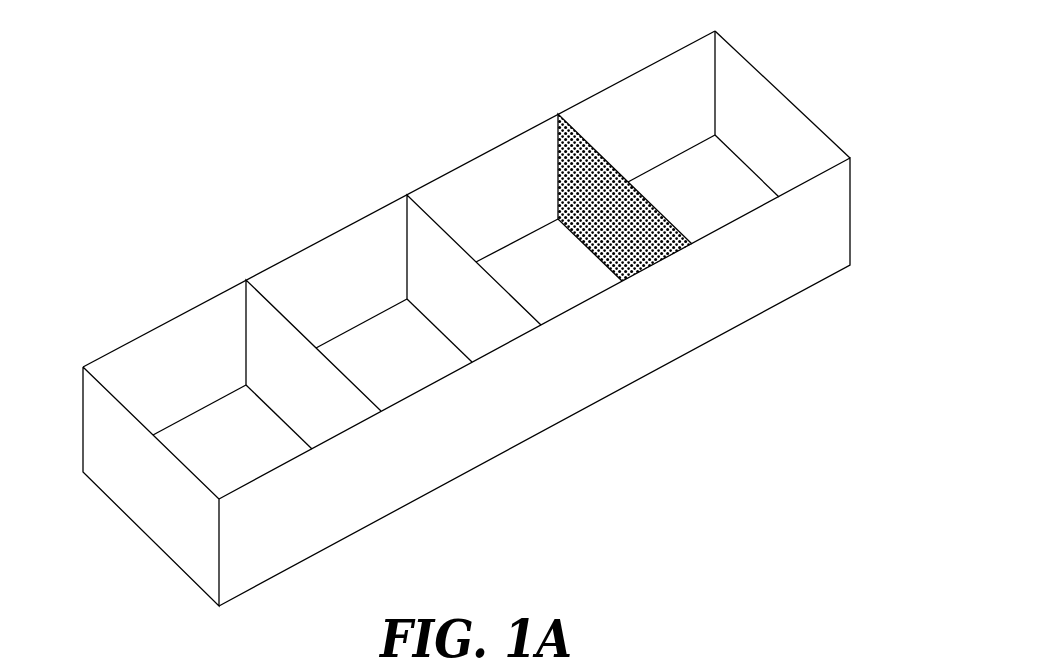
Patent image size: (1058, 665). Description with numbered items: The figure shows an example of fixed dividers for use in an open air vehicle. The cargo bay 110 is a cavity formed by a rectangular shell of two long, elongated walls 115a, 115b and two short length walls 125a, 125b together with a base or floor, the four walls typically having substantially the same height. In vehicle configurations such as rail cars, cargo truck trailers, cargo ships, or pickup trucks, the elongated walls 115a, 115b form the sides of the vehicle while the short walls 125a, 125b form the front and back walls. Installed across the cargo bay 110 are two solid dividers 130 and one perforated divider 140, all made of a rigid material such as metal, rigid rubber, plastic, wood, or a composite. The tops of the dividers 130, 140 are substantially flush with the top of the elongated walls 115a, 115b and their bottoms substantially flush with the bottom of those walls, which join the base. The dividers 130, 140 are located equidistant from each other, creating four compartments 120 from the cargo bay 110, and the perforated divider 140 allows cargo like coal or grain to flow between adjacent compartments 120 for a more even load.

The cargo bay 110 is at (465, 310).
The elongated wall 115a is at (768, 283).
The elongated wall 115b is at (653, 87).
The compartment 120 is at (205, 430).
The short length wall 125a is at (777, 115).
The short length wall 125b is at (160, 515).
The solid divider 130 is at (460, 295).
The perforated divider 140 is at (502, 179).